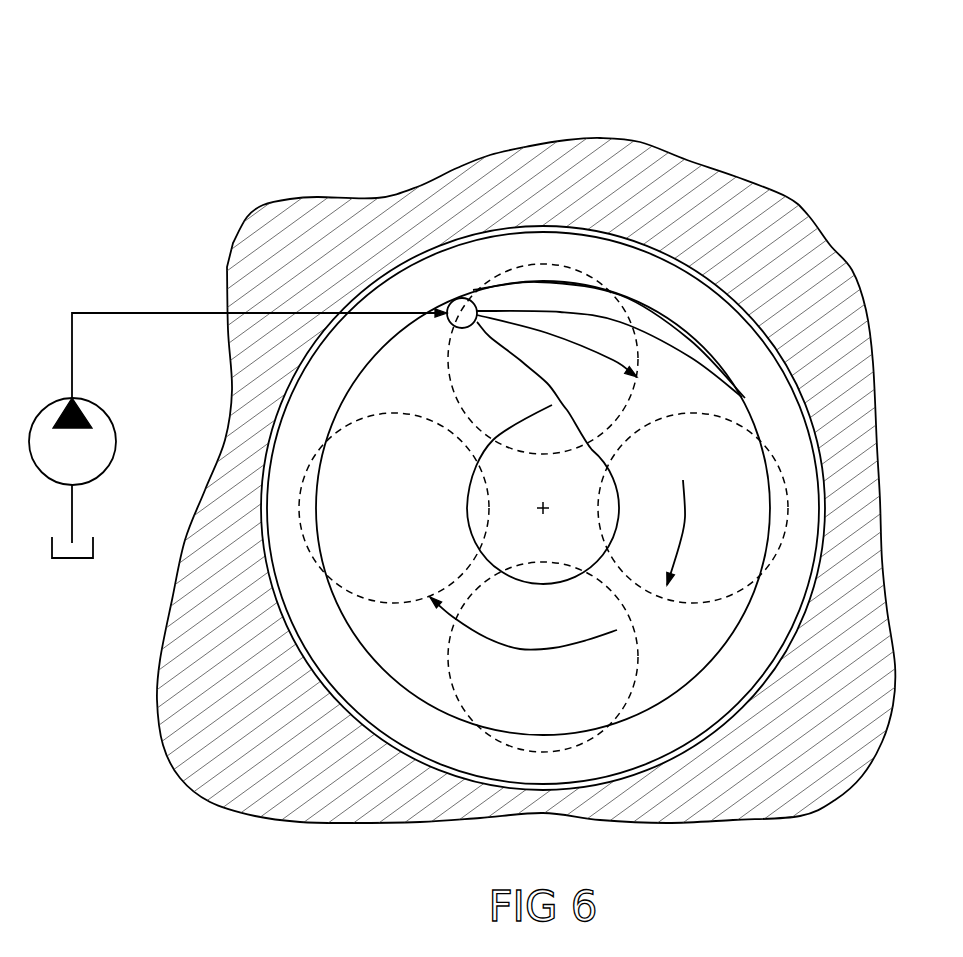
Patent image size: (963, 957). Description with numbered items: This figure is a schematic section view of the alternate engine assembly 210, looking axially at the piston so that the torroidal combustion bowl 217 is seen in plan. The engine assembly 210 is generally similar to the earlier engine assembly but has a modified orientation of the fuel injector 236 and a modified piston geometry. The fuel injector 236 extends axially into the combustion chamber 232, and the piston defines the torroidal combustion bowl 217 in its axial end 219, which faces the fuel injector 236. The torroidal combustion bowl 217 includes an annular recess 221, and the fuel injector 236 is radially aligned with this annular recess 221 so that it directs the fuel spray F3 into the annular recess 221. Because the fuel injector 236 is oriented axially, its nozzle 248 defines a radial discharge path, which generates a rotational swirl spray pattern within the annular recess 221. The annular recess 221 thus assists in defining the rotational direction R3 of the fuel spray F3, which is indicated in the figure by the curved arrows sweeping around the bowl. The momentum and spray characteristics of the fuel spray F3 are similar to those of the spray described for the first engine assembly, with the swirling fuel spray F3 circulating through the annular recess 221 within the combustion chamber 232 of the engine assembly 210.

The engine assembly 210 is at (818, 117).
The axial end 219 is at (692, 298).
The annular recess 221 is at (518, 732).
The combustion chamber 232 is at (638, 285).
The torroidal combustion bowl 217 is at (453, 297).
The nozzle 248 is at (460, 300).
The fuel injector 236 is at (457, 297).
The fuel spray F3 is at (517, 300).
The rotational direction R3 is at (517, 650).